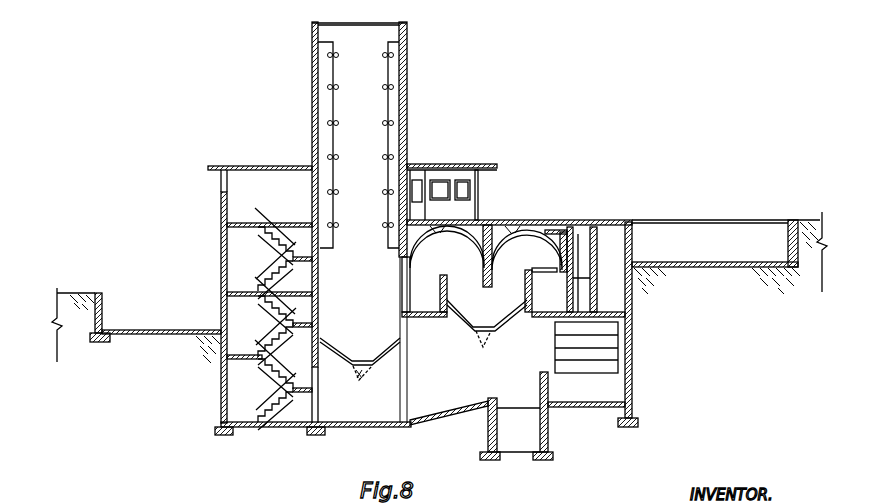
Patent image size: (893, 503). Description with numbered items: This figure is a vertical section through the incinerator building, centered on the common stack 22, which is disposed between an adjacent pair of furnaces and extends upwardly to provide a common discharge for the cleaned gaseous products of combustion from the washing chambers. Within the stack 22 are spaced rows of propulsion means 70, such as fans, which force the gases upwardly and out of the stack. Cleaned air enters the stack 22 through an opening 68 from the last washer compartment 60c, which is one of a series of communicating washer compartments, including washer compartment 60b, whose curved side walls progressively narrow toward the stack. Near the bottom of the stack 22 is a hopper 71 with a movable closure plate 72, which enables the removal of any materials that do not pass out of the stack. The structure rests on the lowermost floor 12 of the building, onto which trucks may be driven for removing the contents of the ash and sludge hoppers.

The lowermost floor 12 is at (372, 416).
The common stack 22 is at (312, 63).
The propulsion means 70 is at (386, 89).
The opening 68 is at (397, 276).
The hopper 71 is at (383, 353).
The movable closure plate 72 is at (357, 376).
The washer compartment 60c is at (476, 326).
The washer compartment 60b is at (534, 324).